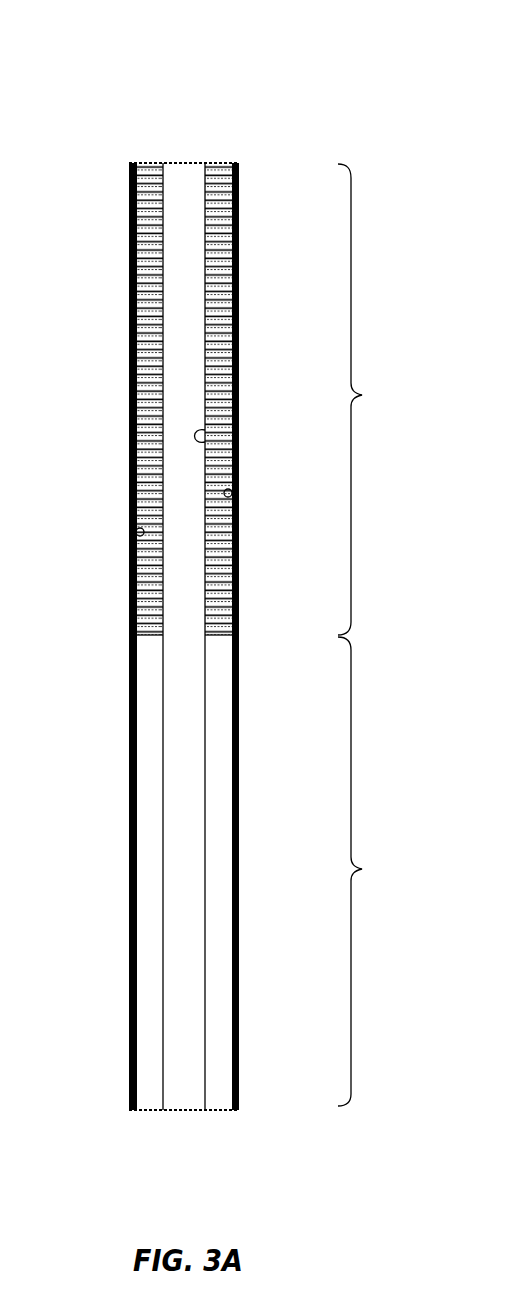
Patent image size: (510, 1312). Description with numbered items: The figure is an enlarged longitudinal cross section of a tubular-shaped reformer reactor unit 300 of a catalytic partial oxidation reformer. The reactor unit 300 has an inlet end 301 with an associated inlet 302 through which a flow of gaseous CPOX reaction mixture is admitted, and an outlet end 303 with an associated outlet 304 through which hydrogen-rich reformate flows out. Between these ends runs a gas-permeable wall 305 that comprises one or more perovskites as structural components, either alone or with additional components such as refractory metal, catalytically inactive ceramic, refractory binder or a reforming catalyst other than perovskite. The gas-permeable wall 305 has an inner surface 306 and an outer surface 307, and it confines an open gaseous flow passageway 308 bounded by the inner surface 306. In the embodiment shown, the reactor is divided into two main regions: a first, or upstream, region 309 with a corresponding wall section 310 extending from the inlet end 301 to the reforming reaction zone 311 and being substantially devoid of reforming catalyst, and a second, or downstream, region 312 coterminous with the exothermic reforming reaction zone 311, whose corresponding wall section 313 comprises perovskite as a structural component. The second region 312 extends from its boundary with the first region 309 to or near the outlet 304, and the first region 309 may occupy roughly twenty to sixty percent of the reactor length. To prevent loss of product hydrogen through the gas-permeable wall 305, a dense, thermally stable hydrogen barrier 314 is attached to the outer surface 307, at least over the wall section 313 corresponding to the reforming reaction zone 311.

The reformer reactor unit 300 is at (239, 97).
The inlet end 301 is at (240, 1100).
The inlet 302 is at (184, 1126).
The outlet end 303 is at (240, 172).
The outlet 304 is at (181, 148).
The gas-permeable wall 305 is at (150, 348).
The inner surface 306 is at (203, 443).
The outer surface 307 is at (233, 499).
The open gaseous flow passageway 308 is at (170, 409).
The first region 309 is at (370, 871).
The wall section 310 is at (148, 877).
The reforming reaction zone 311 is at (183, 453).
The second region 312 is at (370, 399).
The wall section 313 is at (150, 312).
The hydrogen barrier 314 is at (130, 578).